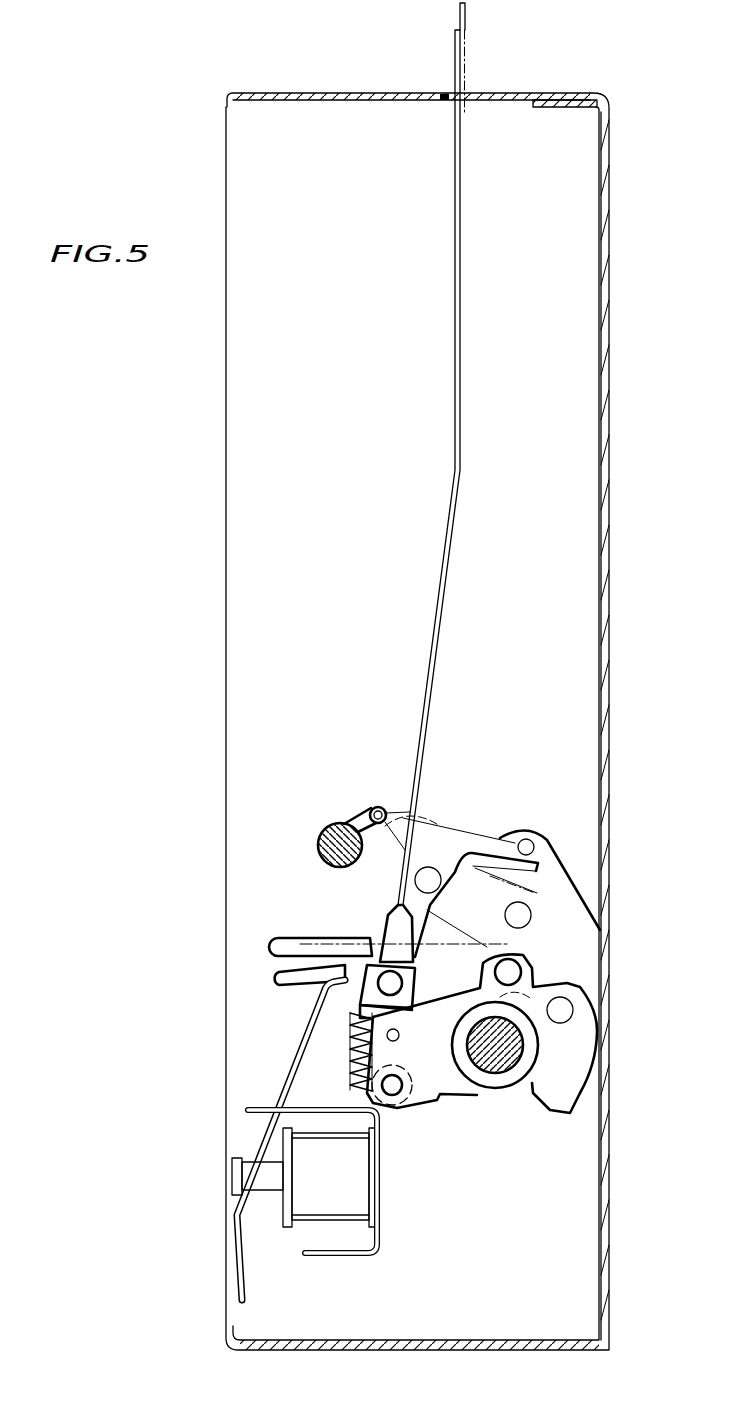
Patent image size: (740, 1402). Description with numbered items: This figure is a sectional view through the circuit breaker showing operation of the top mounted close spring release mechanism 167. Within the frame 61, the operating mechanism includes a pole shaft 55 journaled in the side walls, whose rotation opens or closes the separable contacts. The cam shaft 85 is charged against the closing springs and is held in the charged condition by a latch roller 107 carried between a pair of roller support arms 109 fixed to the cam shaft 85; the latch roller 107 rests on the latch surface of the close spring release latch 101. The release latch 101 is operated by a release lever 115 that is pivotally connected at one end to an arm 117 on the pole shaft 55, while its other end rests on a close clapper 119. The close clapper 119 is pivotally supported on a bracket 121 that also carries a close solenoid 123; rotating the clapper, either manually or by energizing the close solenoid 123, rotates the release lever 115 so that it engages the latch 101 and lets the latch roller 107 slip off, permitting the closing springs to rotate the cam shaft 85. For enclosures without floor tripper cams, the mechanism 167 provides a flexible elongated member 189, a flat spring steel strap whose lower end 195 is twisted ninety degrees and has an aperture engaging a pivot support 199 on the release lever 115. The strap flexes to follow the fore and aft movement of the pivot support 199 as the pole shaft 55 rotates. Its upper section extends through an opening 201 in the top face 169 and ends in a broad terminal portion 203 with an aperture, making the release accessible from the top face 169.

The frame 61 is at (604, 133).
The top face 169 is at (250, 92).
The top mounted close spring release mechanism 167 is at (497, 77).
The opening 201 is at (446, 103).
The broad terminal portion 203 is at (463, 45).
The flexible elongated member 189 is at (455, 418).
The cam shaft 85 is at (322, 843).
The roller support arms 109 is at (358, 822).
The latch roller 107 is at (378, 806).
The close spring release latch 101 is at (446, 840).
The pivot support 199 is at (382, 975).
The release lever 115 is at (272, 976).
The lower end 195 is at (370, 995).
The arm 117 is at (523, 1004).
The pole shaft 55 is at (486, 1060).
The close clapper 119 is at (288, 1077).
The close solenoid 123 is at (362, 1197).
The bracket 121 is at (313, 1258).